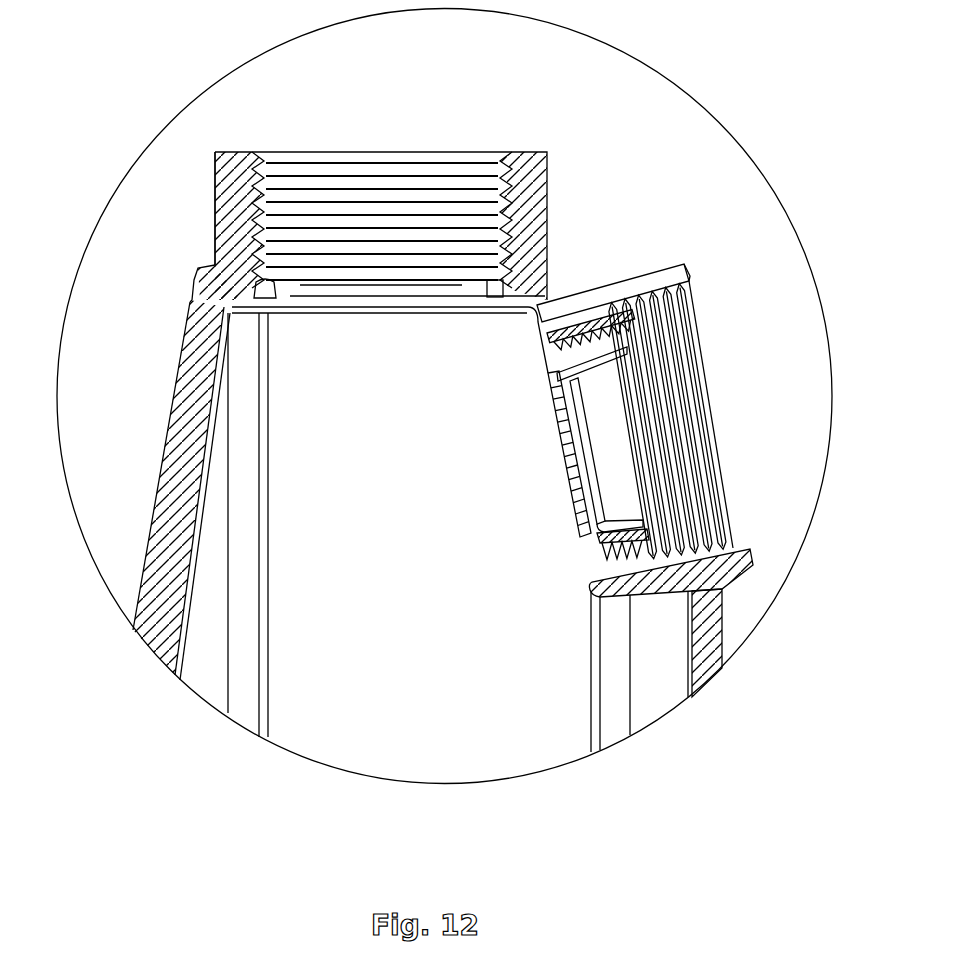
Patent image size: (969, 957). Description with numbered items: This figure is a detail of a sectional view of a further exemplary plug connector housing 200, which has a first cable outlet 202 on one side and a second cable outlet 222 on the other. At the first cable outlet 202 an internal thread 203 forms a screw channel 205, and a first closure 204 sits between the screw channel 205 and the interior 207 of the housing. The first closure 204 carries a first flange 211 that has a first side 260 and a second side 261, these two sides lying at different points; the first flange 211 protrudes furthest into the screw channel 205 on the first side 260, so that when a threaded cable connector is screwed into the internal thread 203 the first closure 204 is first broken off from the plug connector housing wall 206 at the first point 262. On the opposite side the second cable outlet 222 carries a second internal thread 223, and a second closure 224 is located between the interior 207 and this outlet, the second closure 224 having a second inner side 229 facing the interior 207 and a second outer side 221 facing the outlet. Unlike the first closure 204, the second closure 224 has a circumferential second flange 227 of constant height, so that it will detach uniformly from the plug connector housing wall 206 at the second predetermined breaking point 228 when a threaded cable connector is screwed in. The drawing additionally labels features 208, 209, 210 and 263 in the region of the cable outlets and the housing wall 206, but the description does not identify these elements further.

The plug connector housing 200 is at (133, 428).
The first cable outlet 202 is at (227, 158).
The internal thread 203 is at (477, 180).
The first closure 204 is at (333, 300).
The screw channel 205 is at (392, 145).
The plug connector housing wall 206 is at (142, 582).
The interior 207 is at (345, 720).
The liner 208 is at (270, 313).
The top surface 209 is at (422, 312).
The threads 210 is at (370, 288).
The first flange 211 is at (270, 292).
The second outer side 221 is at (592, 458).
The second cable outlet 222 is at (688, 266).
The second internal thread 223 is at (715, 395).
The second closure 224 is at (558, 440).
The second flange 227 is at (548, 376).
The second predetermined breaking point 228 is at (547, 343).
The second inner side 229 is at (565, 498).
The first side 260 is at (290, 258).
The second side 261 is at (515, 275).
The first point 262 is at (218, 285).
The cap bottom wall 263 is at (498, 312).